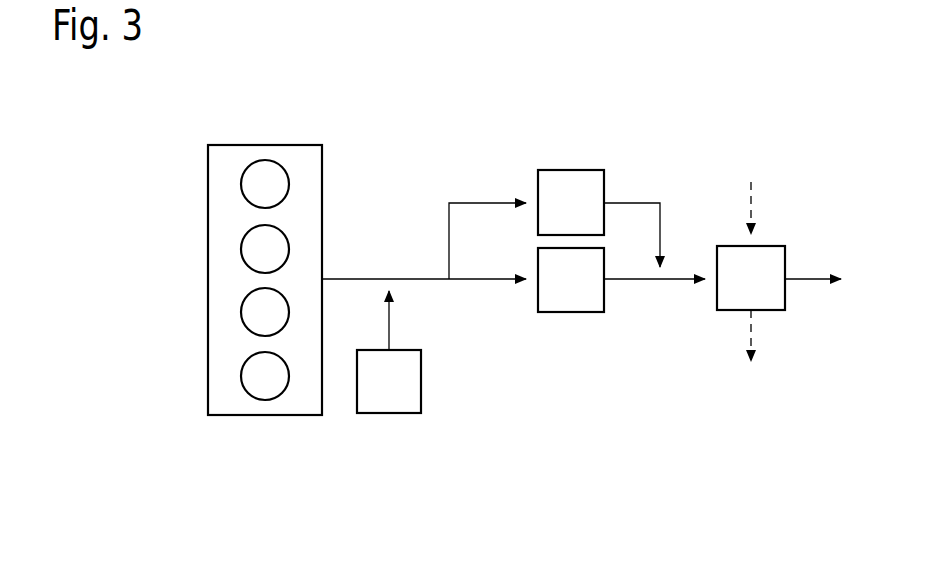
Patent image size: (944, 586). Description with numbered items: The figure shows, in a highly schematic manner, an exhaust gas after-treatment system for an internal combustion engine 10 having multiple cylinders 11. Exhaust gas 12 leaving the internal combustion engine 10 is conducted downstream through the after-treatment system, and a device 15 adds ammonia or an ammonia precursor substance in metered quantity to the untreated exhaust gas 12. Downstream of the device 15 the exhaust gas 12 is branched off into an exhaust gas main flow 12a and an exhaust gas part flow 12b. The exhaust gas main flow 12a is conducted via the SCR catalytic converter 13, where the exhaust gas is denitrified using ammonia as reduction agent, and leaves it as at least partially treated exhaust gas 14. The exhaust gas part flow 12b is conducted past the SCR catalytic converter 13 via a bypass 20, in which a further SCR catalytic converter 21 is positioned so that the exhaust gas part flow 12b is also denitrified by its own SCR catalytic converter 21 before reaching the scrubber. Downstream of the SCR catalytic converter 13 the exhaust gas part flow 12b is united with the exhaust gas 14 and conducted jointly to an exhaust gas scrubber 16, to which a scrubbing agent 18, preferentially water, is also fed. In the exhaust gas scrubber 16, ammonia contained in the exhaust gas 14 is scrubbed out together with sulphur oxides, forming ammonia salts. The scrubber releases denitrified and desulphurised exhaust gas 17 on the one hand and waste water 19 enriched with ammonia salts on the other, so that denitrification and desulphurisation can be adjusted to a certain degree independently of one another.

The internal combustion engine 10 is at (300, 133).
The cylinders 11 is at (253, 192).
The exhaust gas 12 is at (354, 278).
The exhaust gas main flow 12a is at (482, 281).
The exhaust gas part flow 12b is at (481, 202).
The SCR catalytic converter 13 is at (571, 300).
The treated exhaust gas 14 is at (637, 282).
The device 15 is at (410, 383).
The exhaust gas scrubber 16 is at (767, 255).
The desulphurised exhaust gas 17 is at (805, 281).
The scrubbing agent 18 is at (748, 199).
The waste water 19 is at (748, 340).
The bypass 20 is at (638, 200).
The further SCR catalytic converter 21 is at (572, 183).